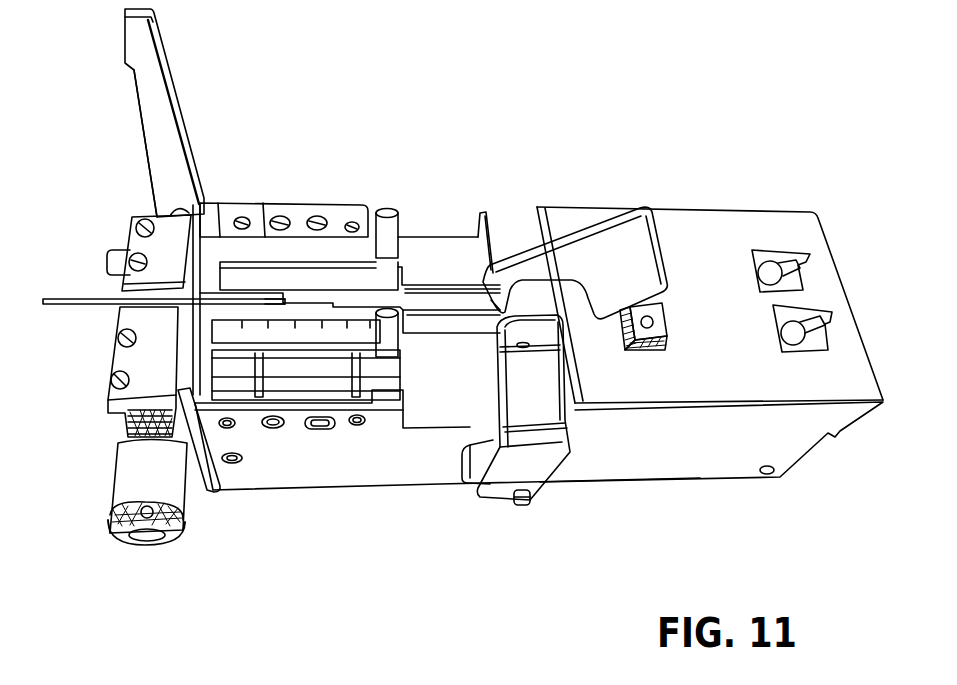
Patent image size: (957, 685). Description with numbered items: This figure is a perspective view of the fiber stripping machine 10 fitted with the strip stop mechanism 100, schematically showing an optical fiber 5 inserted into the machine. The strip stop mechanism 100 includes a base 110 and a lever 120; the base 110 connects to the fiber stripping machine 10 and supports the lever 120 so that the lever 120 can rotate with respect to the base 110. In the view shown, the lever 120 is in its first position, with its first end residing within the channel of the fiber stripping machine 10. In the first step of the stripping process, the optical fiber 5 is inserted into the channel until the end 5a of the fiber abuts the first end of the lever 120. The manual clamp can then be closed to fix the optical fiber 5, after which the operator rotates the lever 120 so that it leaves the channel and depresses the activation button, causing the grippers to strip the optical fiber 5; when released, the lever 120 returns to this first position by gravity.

The optical fiber 5 is at (87, 307).
The end of the fiber 5a is at (285, 298).
The fiber stripping machine 10 is at (357, 470).
The strip stop mechanism 100 is at (525, 505).
The base 110 is at (502, 490).
The lever 120 is at (615, 242).